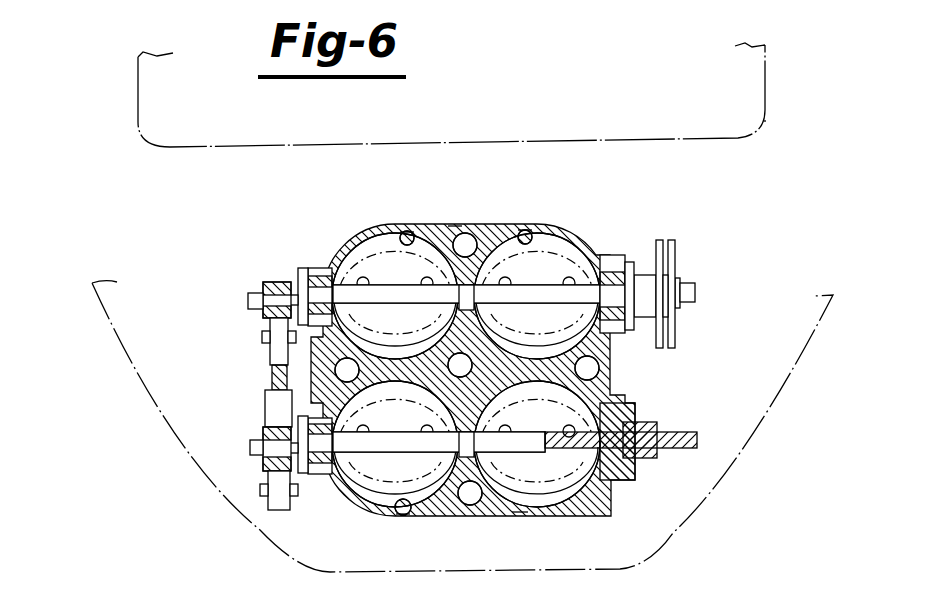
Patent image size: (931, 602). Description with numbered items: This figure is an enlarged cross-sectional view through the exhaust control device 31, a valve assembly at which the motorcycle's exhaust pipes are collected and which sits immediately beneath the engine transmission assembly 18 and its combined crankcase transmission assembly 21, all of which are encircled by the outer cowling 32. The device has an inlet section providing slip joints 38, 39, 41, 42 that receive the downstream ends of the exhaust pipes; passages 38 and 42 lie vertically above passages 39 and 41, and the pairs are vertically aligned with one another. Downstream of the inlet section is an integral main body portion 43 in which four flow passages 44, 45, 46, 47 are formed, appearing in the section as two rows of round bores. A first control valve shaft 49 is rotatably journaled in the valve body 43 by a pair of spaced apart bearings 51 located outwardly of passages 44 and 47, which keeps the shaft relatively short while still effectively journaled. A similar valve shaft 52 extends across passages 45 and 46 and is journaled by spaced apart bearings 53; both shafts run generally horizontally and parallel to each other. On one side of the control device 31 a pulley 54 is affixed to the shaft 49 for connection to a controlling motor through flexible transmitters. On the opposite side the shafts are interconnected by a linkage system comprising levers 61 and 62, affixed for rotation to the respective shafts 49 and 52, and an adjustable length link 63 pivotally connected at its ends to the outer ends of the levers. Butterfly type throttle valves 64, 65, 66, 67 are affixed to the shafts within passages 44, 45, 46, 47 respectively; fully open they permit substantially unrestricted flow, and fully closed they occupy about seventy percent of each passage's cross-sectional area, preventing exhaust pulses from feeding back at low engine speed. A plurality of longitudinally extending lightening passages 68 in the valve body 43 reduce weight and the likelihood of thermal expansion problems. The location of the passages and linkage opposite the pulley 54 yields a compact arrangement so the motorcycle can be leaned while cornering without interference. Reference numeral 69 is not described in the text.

The engine transmission assembly 18 is at (768, 78).
The crankcase transmission assembly 21 is at (766, 118).
The exhaust control device 31 is at (612, 226).
The outer cowling 32 is at (769, 410).
The slip joint 38 is at (525, 230).
The slip joint 39 is at (518, 508).
The slip joint 41 is at (405, 513).
The slip joint 42 is at (406, 230).
The main body portion 43 is at (455, 225).
The flow passage 44 is at (548, 248).
The flow passage 45 is at (560, 492).
The flow passage 46 is at (382, 495).
The flow passage 47 is at (375, 250).
The first control valve shaft 49 is at (697, 292).
The bearings 51 is at (320, 272).
The valve shaft 52 is at (700, 432).
The bearings 53 is at (326, 475).
The pulley 54 is at (673, 252).
The lever 61 is at (276, 287).
The lever 62 is at (283, 512).
The adjustable length link 63 is at (268, 345).
The throttle valve 64 is at (537, 298).
The throttle valve 65 is at (537, 446).
The throttle valve 66 is at (395, 446).
The throttle valve 67 is at (395, 298).
The lightening passages 68 is at (468, 240).
The link block 69 is at (262, 402).